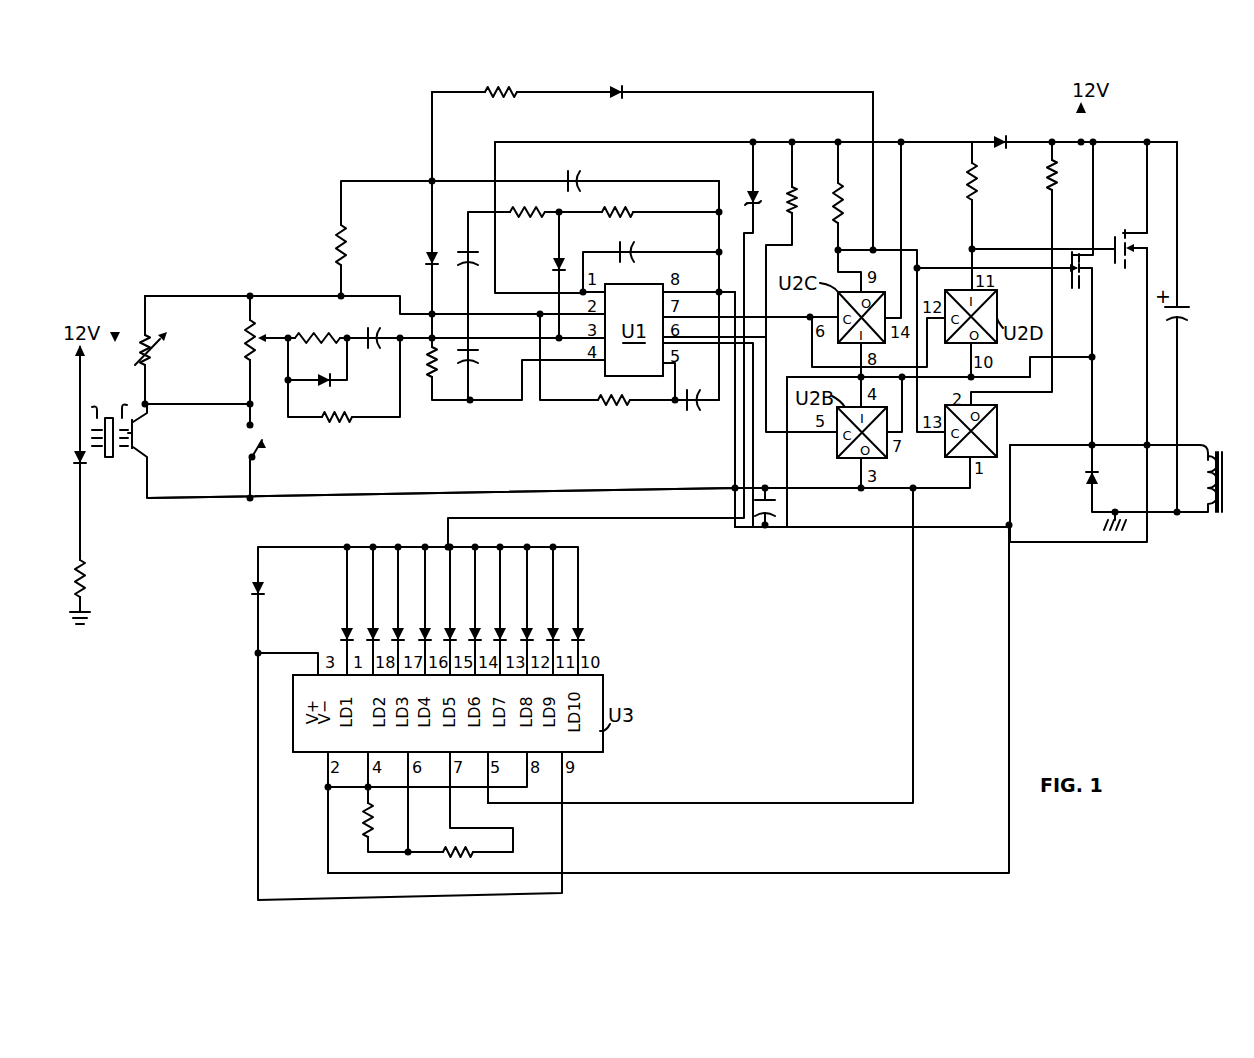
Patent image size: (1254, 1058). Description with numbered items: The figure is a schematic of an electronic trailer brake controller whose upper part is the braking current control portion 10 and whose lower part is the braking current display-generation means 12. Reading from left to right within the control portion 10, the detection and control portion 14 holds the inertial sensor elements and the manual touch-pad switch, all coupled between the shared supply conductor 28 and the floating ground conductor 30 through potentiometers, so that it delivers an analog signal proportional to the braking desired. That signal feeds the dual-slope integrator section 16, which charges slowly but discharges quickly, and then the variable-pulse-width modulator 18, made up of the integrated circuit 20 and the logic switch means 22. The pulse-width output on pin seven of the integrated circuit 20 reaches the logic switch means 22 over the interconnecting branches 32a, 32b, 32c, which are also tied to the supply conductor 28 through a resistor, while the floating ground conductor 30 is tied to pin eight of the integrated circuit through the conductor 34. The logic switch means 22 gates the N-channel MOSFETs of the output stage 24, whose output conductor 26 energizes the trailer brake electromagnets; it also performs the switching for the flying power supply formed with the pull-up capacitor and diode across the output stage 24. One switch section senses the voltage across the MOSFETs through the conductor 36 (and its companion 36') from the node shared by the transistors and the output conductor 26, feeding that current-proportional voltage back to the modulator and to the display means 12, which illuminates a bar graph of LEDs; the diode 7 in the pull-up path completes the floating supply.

The braking current control portion 10 is at (392, 146).
The braking current display-generation means 12 is at (212, 747).
The detection and control portion 14 is at (115, 340).
The dual-slope integrator section 16 is at (313, 492).
The variable-pulse-width modulator 18 is at (647, 426).
The integrated circuit 20 is at (703, 194).
The logic switch means 22 is at (888, 200).
The output stage 24 is at (1163, 229).
The output conductor 26 is at (1115, 445).
The supply conductor 28 is at (672, 141).
The ground conductor 30 is at (507, 490).
The interconnecting branch 32a is at (824, 318).
The interconnecting branch 32b is at (813, 436).
The interconnecting branch 32c is at (940, 322).
The conductor 34 is at (735, 457).
The conductor 36 is at (1073, 401).
The output node 36' is at (1125, 346).
The diode 7 is at (1083, 475).